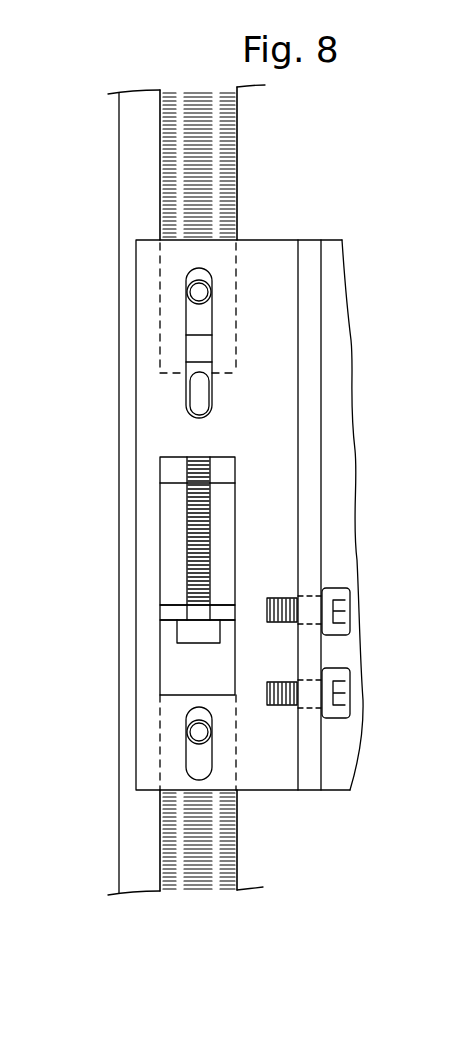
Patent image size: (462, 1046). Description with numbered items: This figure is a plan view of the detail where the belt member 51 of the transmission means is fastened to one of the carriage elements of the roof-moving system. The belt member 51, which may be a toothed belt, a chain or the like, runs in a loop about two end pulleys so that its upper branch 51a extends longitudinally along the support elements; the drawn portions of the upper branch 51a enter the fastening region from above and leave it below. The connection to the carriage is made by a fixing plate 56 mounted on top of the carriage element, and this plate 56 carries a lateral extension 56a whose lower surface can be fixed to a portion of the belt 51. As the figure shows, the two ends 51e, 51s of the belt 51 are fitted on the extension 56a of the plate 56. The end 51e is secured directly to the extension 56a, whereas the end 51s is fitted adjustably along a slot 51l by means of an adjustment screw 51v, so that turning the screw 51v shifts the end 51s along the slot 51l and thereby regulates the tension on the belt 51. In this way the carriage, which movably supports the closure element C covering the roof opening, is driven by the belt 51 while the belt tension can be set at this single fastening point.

The belt member 51 is at (238, 133).
The upper branch of the belt 51a is at (237, 175).
The end of the belt 51s is at (205, 238).
The end of the belt 51e is at (205, 799).
The slot 51l is at (190, 346).
The adjustment screw 51v is at (185, 530).
The fixing plate 56 is at (342, 445).
The lateral extension 56a is at (278, 289).
The closure element C is at (0, 558).